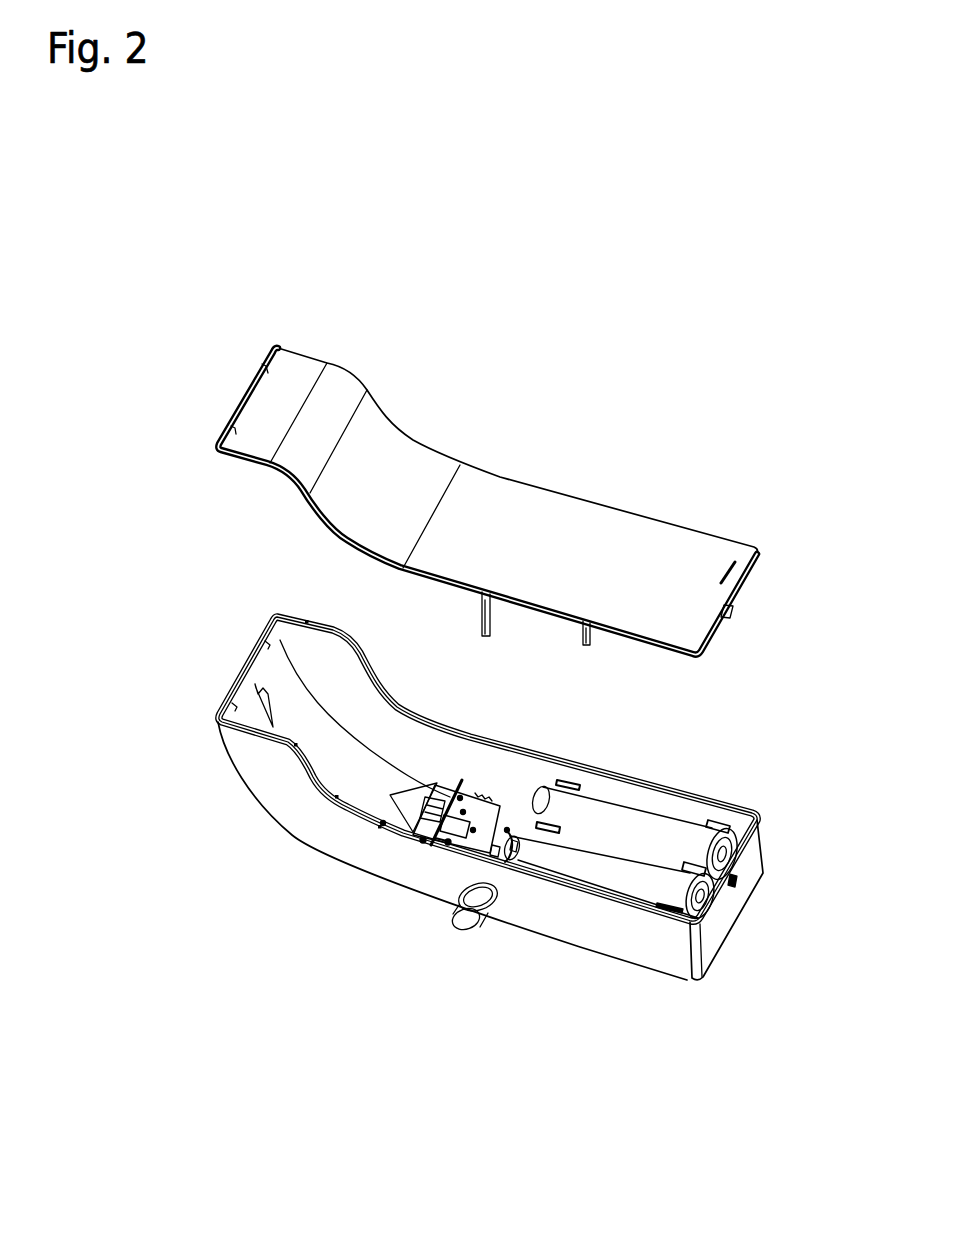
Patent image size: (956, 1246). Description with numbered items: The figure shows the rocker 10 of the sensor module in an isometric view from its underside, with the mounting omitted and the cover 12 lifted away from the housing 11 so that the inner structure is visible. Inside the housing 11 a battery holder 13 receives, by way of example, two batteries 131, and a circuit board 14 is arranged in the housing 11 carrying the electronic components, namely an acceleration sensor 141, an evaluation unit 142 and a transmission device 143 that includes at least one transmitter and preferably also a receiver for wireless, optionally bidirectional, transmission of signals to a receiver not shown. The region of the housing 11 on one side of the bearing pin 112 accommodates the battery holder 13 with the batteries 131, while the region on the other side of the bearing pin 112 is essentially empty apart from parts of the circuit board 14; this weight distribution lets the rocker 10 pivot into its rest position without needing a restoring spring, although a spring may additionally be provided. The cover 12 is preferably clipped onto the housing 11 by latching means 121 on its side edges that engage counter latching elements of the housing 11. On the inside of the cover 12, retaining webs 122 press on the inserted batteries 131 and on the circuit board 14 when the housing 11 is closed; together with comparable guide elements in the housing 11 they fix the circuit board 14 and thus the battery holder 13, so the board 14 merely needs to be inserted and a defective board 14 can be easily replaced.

The rocker 10 is at (160, 498).
The housing 11 is at (650, 947).
The bearing pin 112 is at (467, 930).
The cover 12 is at (525, 513).
The latching means 121 is at (736, 612).
The retaining webs 122 is at (582, 642).
The battery holder 13 is at (717, 827).
The batteries 131 is at (695, 845).
The circuit board 14 is at (512, 818).
The acceleration sensor 141 is at (438, 795).
The evaluation unit 142 is at (443, 837).
The transmission device 143 is at (390, 795).